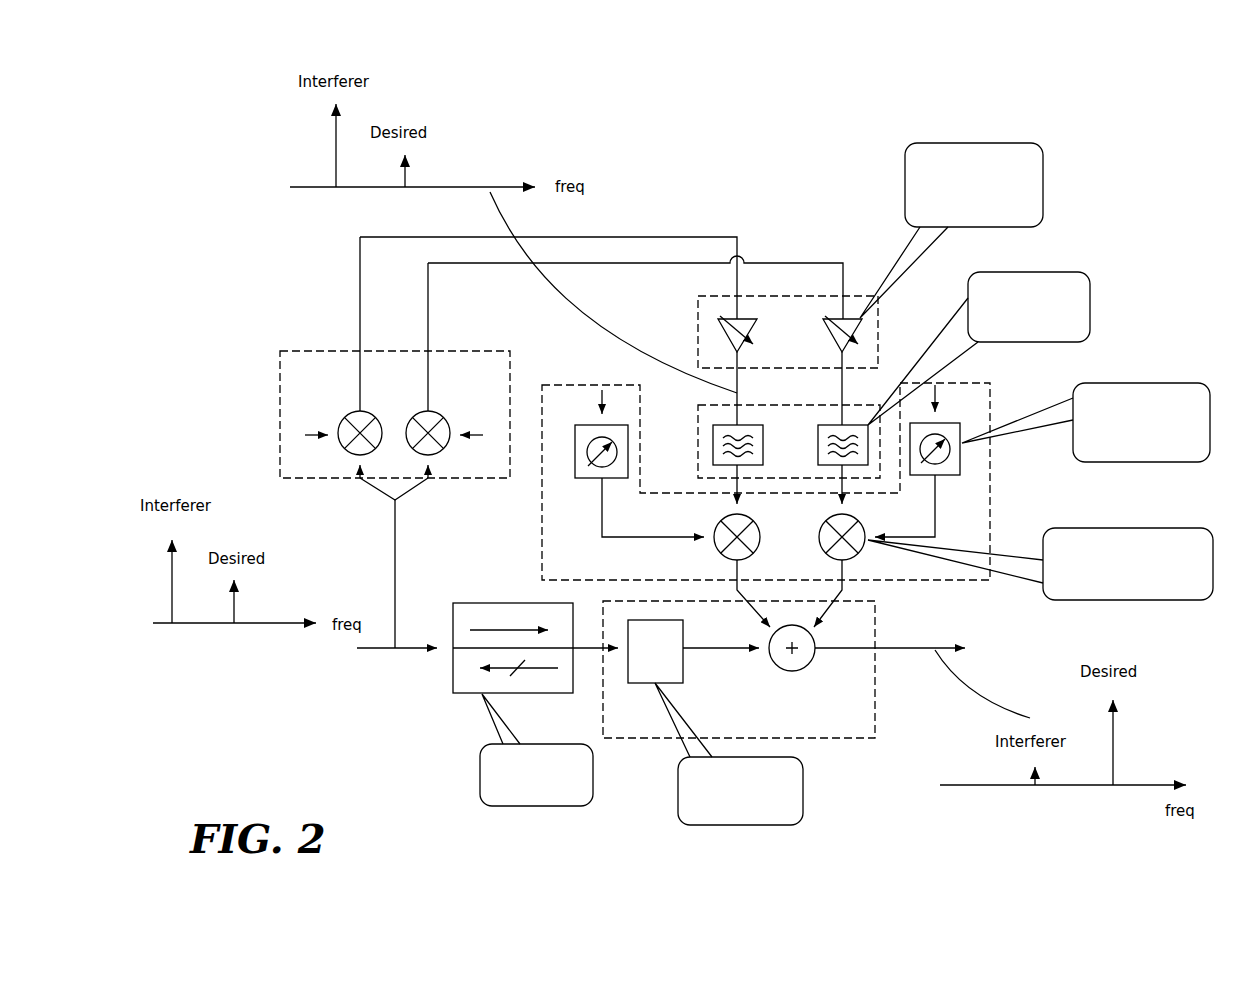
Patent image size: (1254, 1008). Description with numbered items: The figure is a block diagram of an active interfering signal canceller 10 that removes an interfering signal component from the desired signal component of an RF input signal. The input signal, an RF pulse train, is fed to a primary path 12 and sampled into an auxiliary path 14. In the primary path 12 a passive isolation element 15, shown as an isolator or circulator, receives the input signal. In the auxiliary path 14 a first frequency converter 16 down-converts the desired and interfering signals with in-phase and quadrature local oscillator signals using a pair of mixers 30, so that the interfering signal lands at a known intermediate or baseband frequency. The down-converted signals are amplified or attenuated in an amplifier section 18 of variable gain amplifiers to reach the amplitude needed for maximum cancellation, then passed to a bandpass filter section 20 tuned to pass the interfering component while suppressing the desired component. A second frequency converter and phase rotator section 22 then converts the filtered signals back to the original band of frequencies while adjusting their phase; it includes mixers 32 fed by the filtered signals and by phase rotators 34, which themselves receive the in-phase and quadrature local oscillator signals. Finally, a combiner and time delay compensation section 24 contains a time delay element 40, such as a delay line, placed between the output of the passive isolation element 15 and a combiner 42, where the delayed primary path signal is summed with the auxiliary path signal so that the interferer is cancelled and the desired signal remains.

The active interfering signal canceller 10 is at (186, 376).
The primary path 12 is at (612, 601).
The auxiliary path 14 is at (601, 311).
The passive isolation element 15 is at (503, 603).
The first frequency converter 16 is at (310, 379).
The amplifier section 18 is at (698, 325).
The bandpass filter section 20 is at (698, 420).
The second frequency converter and phase rotator section 22 is at (562, 385).
The combiner and time delay compensation section 24 is at (635, 731).
The mixer 30 is at (364, 411).
The mixer 32 is at (728, 556).
The phase rotator 34 is at (582, 479).
The time delay element 40 is at (683, 665).
The combiner 42 is at (793, 671).